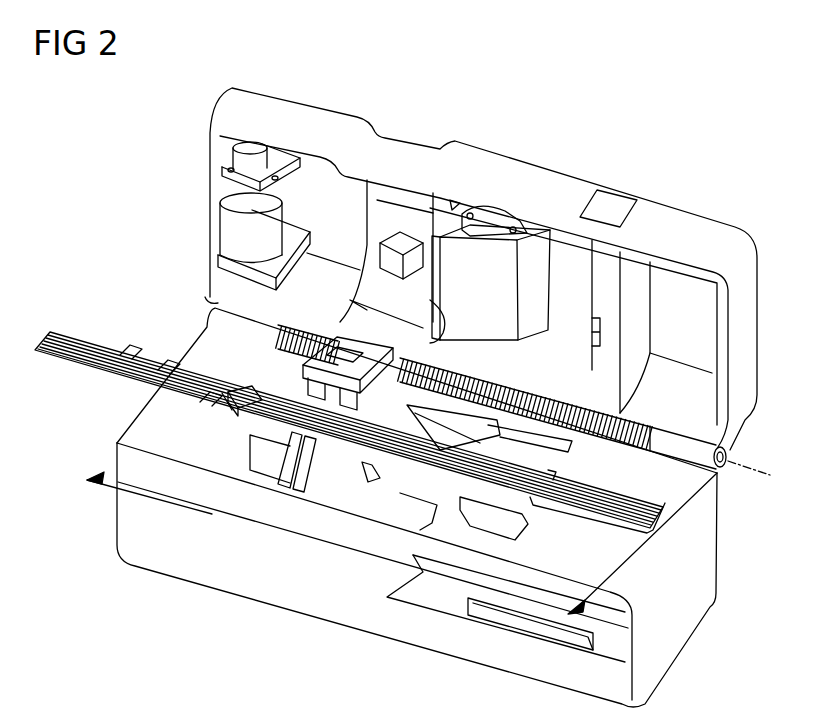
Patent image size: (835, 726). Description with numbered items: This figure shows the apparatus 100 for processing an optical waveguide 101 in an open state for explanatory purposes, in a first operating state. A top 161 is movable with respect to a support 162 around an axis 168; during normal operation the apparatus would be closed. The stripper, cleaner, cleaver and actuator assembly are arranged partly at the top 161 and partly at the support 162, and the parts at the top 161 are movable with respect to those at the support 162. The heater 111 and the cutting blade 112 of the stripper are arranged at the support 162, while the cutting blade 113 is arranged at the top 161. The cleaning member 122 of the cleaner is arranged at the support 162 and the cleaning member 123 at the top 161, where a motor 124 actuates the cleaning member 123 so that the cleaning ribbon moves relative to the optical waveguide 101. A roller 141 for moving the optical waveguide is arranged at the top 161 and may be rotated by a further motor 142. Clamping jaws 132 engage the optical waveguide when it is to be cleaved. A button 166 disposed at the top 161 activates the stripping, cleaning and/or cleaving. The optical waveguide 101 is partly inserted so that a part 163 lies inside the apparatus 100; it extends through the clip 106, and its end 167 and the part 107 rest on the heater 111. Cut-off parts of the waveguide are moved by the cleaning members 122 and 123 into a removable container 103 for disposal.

The apparatus 100 is at (125, 218).
The optical waveguide 101 is at (60, 330).
The container 103 is at (452, 605).
The clip 106 is at (247, 407).
The part of the optical waveguide 107 is at (633, 533).
The heater 111 is at (677, 507).
The cutting blade 112 is at (552, 477).
The cutting blade 113 is at (593, 330).
The cleaning member 122 is at (375, 480).
The cleaning member 123 is at (487, 318).
The motor 124 is at (490, 218).
The clamping jaws 132 is at (305, 367).
The roller 141 is at (230, 228).
The further motor 142 is at (247, 152).
The top 161 is at (743, 332).
The support 162 is at (677, 627).
The part of the optical waveguide 163 is at (335, 547).
The button 166 is at (613, 202).
The end of the optical waveguide 167 is at (655, 517).
The axis 168 is at (763, 462).